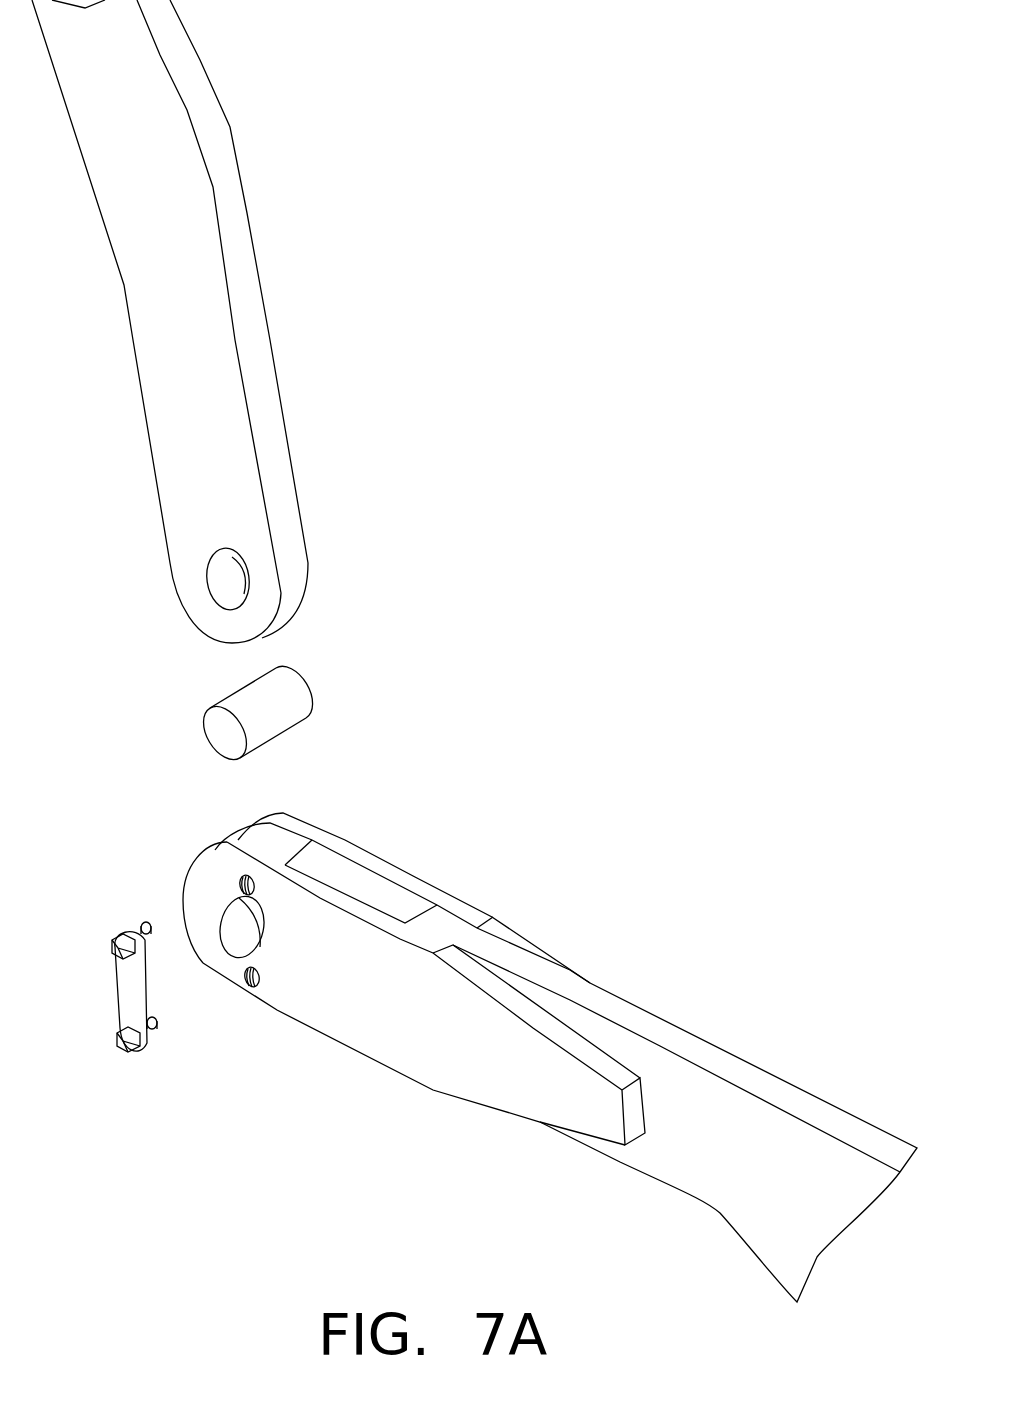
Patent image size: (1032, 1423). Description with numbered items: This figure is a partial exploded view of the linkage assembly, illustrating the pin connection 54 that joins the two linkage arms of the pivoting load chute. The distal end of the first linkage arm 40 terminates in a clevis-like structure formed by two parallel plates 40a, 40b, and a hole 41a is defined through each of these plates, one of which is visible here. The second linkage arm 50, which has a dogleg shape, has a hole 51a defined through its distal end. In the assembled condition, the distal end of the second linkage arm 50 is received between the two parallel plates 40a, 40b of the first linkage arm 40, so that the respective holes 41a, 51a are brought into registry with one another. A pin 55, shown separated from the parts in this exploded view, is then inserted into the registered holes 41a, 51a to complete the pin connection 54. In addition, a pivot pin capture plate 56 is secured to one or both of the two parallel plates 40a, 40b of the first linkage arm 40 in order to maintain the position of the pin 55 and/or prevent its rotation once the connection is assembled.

The first linkage arm 40 is at (688, 1198).
The parallel plate 40a is at (460, 1100).
The parallel plate 40b is at (523, 943).
The hole 41a is at (232, 920).
The second linkage arm 50 is at (242, 242).
The hole 51a is at (213, 597).
The pin connection 54 is at (568, 457).
The pin 55 is at (220, 732).
The pivot pin capture plate 56 is at (145, 1035).